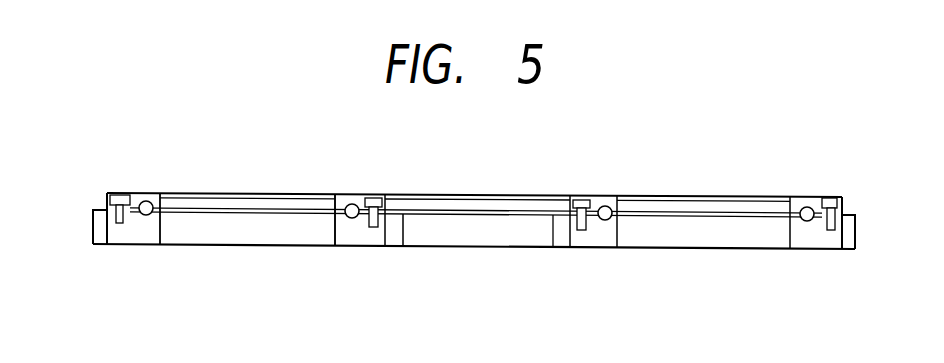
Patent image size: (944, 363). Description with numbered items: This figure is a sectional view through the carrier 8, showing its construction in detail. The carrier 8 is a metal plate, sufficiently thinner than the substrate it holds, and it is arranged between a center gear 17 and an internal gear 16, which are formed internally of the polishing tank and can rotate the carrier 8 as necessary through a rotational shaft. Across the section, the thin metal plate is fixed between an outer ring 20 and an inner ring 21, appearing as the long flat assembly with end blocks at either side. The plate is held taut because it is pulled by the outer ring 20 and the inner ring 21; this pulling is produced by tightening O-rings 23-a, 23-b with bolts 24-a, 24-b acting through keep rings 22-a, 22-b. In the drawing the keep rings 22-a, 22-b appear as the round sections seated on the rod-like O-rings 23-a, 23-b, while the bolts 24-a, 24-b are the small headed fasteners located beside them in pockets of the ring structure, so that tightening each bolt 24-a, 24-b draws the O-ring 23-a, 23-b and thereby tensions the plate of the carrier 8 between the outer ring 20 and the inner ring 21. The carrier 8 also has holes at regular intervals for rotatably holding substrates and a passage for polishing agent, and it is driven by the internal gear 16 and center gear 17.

The carrier 8 is at (167, 214).
The internal gear 16 is at (87, 236).
The center gear 17 is at (395, 238).
The outer ring 20 is at (123, 235).
The inner ring 21 is at (346, 237).
The keep ring 22-a is at (153, 191).
The keep ring 22-b is at (340, 195).
The O-ring 23-a is at (138, 198).
The O-ring 23-b is at (358, 198).
The bolt 24-a is at (115, 193).
The bolt 24-b is at (375, 195).